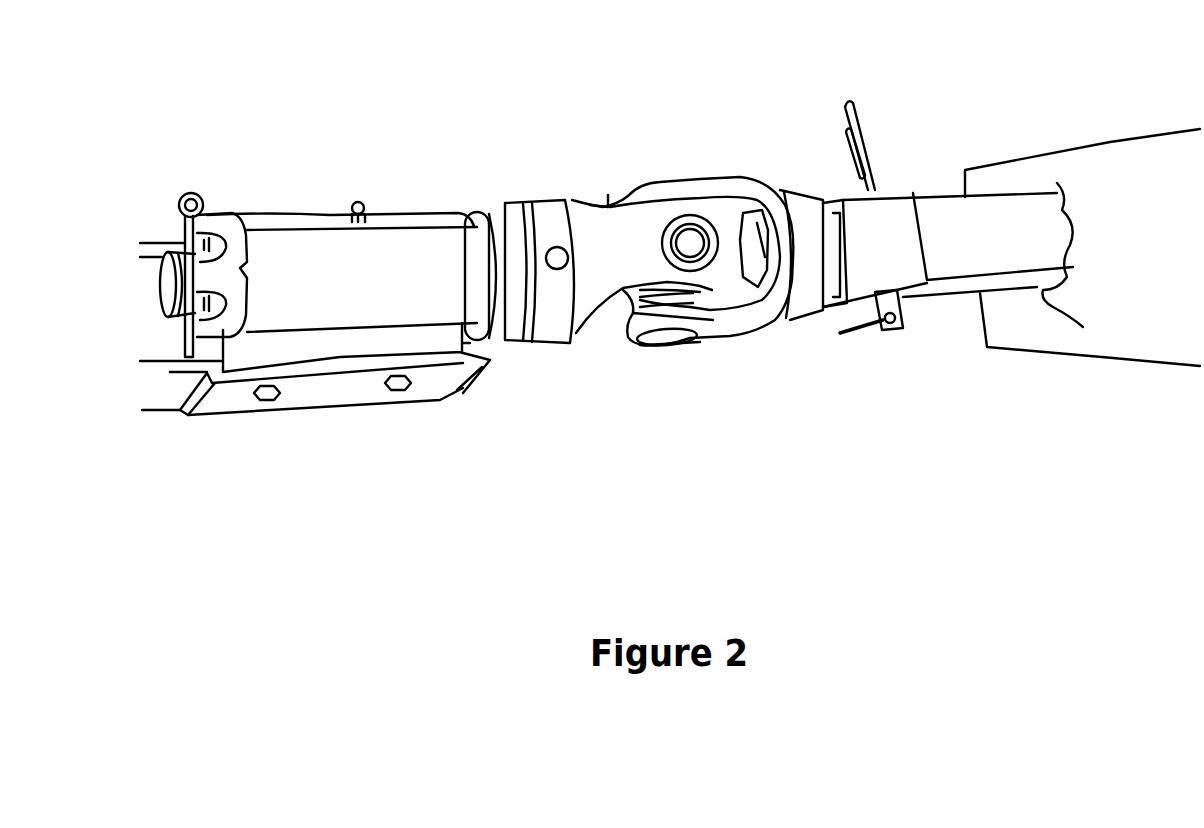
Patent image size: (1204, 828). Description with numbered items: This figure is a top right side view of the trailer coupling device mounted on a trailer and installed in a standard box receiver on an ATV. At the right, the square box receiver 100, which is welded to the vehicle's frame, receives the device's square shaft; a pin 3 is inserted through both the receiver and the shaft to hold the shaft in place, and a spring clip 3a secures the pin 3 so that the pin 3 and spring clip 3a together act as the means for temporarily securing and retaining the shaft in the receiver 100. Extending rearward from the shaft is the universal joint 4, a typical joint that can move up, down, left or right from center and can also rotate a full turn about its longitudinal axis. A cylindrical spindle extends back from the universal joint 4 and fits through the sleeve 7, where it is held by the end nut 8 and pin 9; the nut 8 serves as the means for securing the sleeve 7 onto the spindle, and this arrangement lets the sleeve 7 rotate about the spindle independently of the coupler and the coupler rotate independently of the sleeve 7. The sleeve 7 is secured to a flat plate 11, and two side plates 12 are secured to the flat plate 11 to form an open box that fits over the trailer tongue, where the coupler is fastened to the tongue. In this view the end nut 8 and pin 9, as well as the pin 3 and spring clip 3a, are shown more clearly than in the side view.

The pin 3 is at (868, 133).
The spring clip 3a is at (857, 333).
The universal joint 4 is at (710, 220).
The sleeve 7 is at (397, 246).
The nut 8 is at (215, 228).
The pin 9 is at (183, 195).
The flat plate 11 is at (322, 332).
The side plates 12 is at (333, 387).
The square box receiver 100 is at (967, 213).